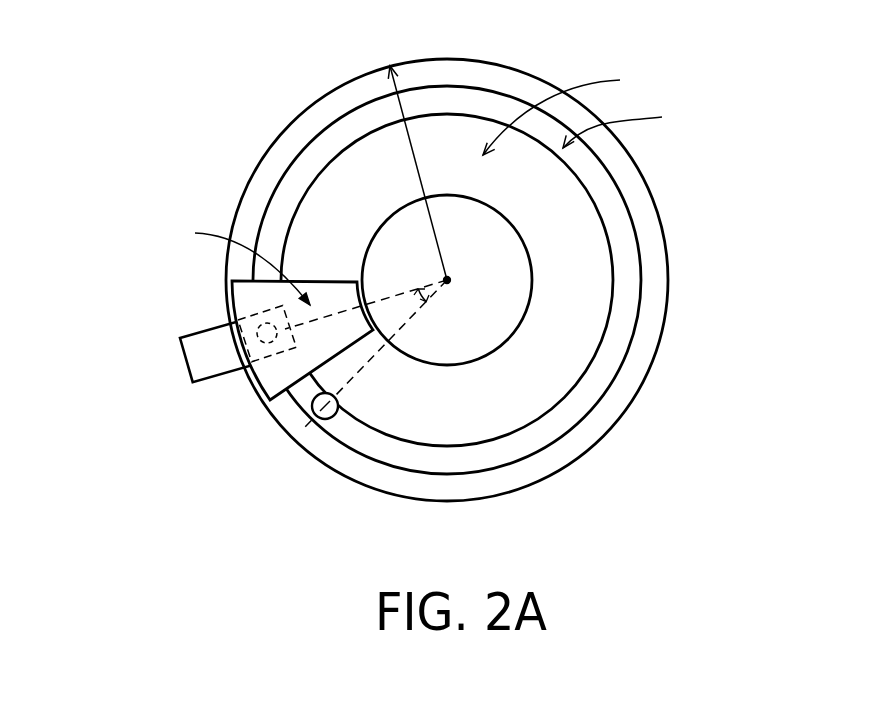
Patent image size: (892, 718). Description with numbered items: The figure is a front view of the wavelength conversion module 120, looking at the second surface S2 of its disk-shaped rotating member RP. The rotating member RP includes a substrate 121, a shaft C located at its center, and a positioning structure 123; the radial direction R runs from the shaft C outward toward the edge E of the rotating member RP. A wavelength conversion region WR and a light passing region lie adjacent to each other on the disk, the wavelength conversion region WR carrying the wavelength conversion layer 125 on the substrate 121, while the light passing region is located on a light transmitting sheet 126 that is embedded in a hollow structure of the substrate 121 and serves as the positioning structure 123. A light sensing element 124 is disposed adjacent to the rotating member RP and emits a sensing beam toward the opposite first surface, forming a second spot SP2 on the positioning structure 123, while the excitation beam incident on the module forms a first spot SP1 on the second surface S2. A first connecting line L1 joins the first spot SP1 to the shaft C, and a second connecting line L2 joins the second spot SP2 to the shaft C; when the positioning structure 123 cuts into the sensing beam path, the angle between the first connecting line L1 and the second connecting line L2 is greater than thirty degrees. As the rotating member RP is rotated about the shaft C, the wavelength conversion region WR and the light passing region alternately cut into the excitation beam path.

The wavelength conversion module 120 is at (718, 541).
The substrate 121 is at (637, 198).
The positioning structure 123 is at (202, 259).
The light sensing element 124 is at (190, 357).
The wavelength conversion layer 125 is at (627, 253).
The light transmitting sheet 126 is at (236, 296).
The shaft C is at (449, 280).
The radial direction R is at (400, 103).
The edge E is at (265, 155).
The second surface S2 is at (568, 107).
The wavelength conversion region WR is at (630, 120).
The first connecting line L1 is at (372, 363).
The second connecting line L2 is at (331, 313).
The first spot SP1 is at (318, 422).
The second spot SP2 is at (268, 345).
The rotating member RP is at (112, 21).